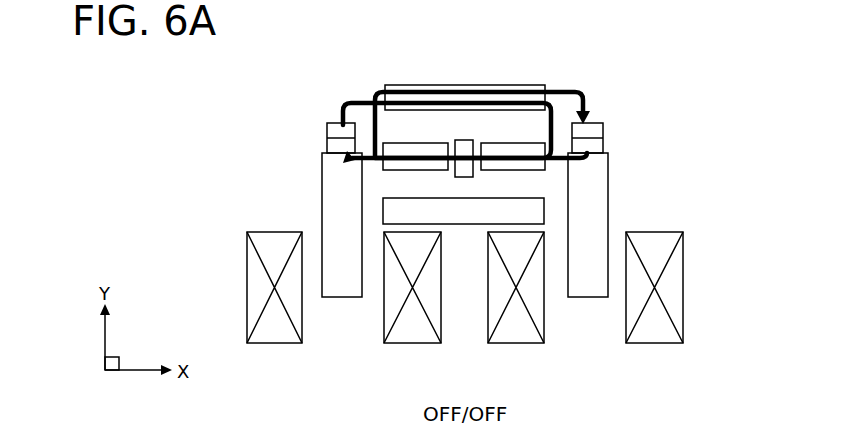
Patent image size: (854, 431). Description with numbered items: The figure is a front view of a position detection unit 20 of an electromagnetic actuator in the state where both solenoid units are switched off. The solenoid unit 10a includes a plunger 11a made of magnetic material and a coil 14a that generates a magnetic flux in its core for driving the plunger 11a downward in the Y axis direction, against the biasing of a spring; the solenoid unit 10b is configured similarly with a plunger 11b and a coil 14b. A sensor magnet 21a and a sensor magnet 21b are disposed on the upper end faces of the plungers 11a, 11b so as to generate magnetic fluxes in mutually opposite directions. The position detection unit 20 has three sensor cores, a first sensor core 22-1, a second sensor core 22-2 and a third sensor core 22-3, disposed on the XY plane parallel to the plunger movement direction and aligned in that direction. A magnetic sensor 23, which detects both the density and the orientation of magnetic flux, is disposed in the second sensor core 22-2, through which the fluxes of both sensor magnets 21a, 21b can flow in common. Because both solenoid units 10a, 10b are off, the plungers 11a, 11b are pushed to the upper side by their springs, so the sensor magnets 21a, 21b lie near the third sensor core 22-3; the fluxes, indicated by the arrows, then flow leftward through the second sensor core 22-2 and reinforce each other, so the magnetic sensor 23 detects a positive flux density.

The position detection unit 20 is at (404, 76).
The third sensor core 22-3 is at (456, 86).
The second sensor core 22-2 is at (532, 143).
The first sensor core 22-1 is at (512, 198).
The magnetic sensor 23 is at (465, 141).
The sensor magnet 21a is at (327, 130).
The sensor magnet 21b is at (603, 132).
The plunger 11a is at (341, 297).
The plunger 11b is at (585, 297).
The solenoid unit 10a is at (255, 226).
The solenoid unit 10b is at (683, 226).
The coil 14a is at (276, 335).
The coil 14b is at (524, 335).